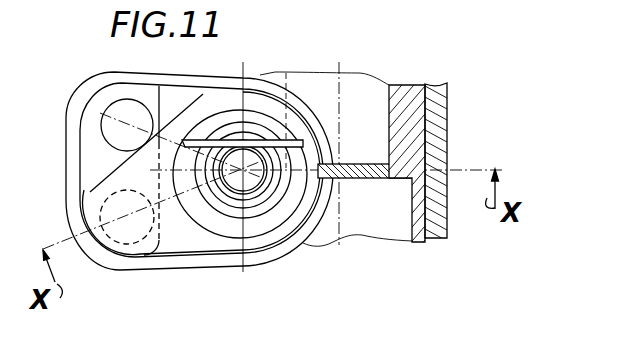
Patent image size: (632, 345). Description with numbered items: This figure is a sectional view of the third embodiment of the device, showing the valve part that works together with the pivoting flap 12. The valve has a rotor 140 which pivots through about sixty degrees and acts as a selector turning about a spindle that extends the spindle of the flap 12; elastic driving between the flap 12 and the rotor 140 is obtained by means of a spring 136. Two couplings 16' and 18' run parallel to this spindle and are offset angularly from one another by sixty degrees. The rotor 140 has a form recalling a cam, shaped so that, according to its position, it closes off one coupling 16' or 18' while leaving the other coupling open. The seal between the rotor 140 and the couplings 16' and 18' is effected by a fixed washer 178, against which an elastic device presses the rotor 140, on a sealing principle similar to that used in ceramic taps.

The flap 12 is at (351, 179).
The coupling 16' is at (118, 264).
The coupling 18' is at (91, 122).
The spring 136 is at (233, 200).
The rotor 140 is at (143, 250).
The fixed washer 178 is at (92, 184).